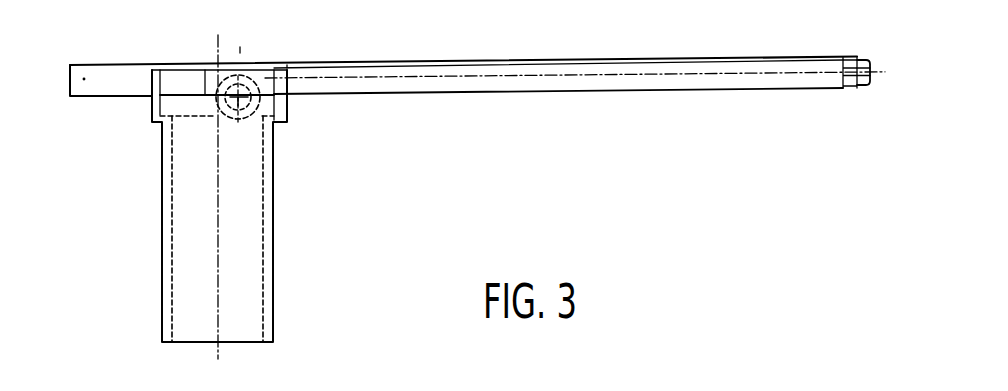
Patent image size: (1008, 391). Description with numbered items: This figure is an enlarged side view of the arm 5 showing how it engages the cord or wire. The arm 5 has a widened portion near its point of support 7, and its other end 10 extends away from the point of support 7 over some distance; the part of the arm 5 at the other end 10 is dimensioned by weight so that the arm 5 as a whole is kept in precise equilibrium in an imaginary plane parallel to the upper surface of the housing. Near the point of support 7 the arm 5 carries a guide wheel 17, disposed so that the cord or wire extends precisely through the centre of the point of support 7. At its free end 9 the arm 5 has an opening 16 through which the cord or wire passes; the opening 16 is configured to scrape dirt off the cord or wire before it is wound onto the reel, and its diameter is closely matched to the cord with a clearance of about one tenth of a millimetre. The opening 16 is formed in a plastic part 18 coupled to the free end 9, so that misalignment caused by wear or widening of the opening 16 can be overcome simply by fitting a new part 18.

The arm 5 is at (673, 79).
The point of support 7 is at (267, 293).
The free end 9 is at (834, 82).
The other end 10 is at (97, 84).
The opening 16 is at (872, 88).
The guide wheel 17 is at (257, 82).
The plastic part 18 is at (861, 58).